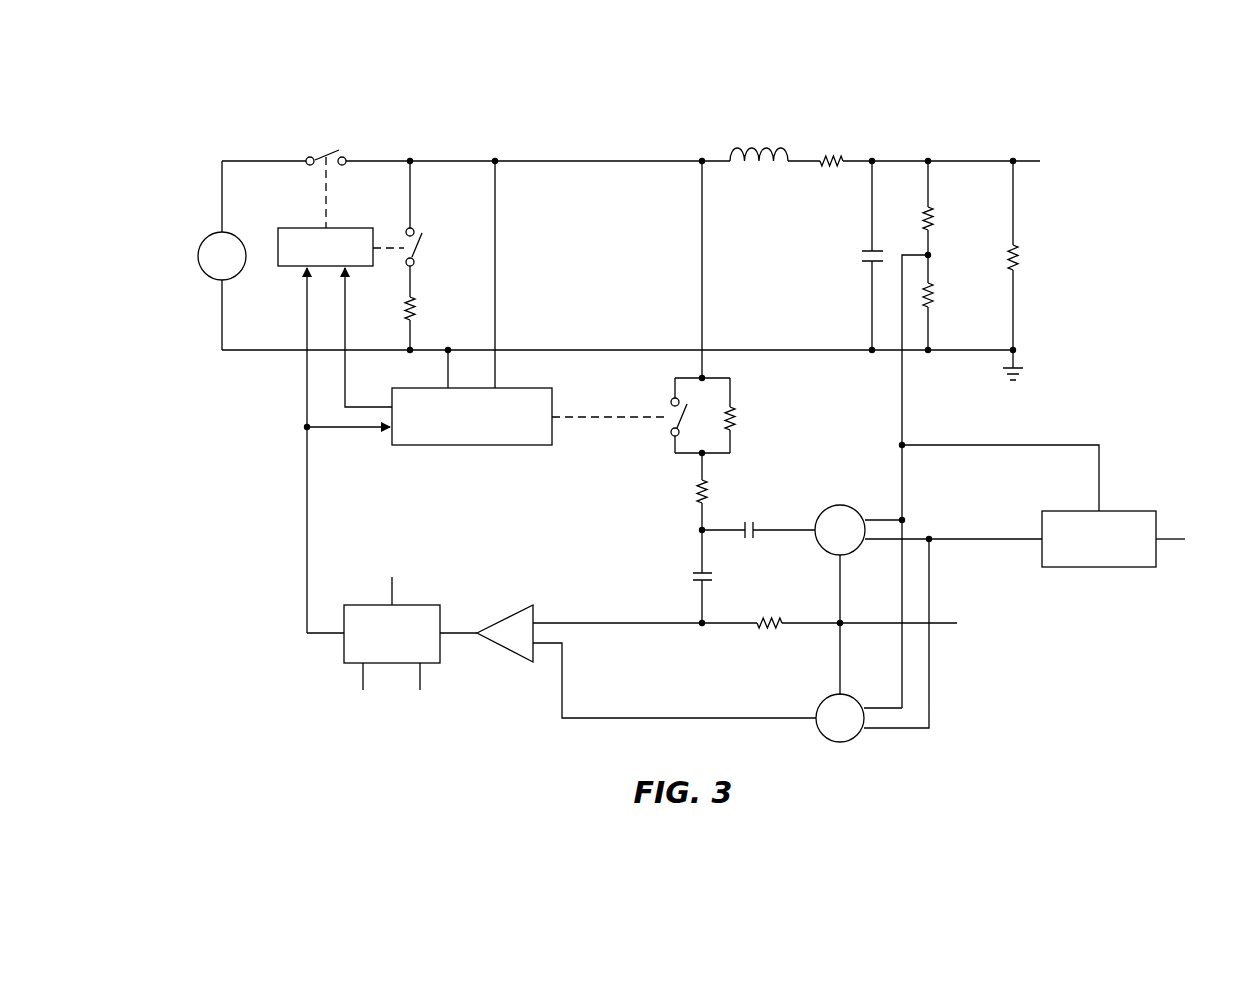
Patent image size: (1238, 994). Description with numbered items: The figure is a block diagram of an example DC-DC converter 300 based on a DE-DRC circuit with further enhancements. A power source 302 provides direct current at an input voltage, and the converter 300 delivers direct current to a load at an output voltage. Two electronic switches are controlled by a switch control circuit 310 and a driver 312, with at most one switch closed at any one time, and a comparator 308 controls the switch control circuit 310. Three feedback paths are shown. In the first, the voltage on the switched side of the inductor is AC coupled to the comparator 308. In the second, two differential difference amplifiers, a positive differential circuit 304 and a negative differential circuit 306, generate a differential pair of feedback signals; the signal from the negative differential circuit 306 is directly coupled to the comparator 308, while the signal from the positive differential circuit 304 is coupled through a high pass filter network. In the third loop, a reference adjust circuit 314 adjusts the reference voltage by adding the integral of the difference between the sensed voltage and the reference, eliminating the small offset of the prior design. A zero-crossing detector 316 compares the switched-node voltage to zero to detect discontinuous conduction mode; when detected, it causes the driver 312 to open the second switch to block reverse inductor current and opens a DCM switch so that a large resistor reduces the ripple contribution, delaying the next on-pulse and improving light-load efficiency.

The DC-DC converter 300 is at (903, 102).
The power source 302 is at (198, 256).
The positive differential circuit 304 is at (843, 505).
The negative differential circuit 306 is at (838, 742).
The comparator 308 is at (505, 647).
The switch control circuit 310 is at (344, 648).
The driver 312 is at (300, 228).
The reference adjust circuit 314 is at (1105, 567).
The zero-crossing detector 316 is at (470, 445).